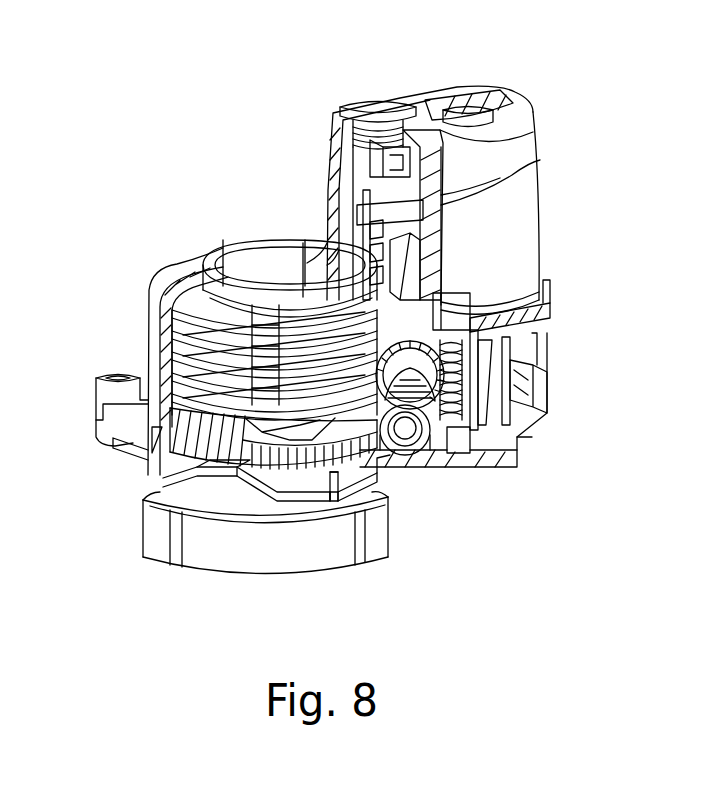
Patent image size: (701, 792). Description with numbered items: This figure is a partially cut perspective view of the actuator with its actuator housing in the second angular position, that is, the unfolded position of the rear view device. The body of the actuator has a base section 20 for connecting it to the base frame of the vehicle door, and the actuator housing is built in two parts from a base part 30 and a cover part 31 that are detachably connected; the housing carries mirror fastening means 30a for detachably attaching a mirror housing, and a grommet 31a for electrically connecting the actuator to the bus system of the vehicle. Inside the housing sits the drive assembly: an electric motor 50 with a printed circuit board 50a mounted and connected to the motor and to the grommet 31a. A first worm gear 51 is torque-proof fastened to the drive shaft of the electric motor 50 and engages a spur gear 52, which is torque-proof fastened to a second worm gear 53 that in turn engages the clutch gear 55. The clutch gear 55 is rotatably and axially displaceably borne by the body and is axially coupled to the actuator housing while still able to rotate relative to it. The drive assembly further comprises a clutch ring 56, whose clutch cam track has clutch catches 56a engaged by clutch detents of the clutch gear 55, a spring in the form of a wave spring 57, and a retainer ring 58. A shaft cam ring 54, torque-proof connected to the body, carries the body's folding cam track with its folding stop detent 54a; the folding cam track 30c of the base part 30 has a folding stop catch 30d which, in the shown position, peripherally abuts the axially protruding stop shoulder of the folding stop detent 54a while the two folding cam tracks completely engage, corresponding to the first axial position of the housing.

The base section 20 is at (217, 573).
The base part 30 is at (528, 455).
The mirror fastening means 30a is at (105, 372).
The folding cam track 30c is at (207, 487).
The folding stop catch 30d is at (327, 483).
The cover part 31 is at (513, 98).
The grommet 31a is at (357, 98).
The electric motor 50 is at (540, 224).
The printed circuit board 50a is at (540, 160).
The first worm gear 51 is at (495, 413).
The spur gear 52 is at (447, 450).
The second worm gear 53 is at (422, 460).
The shaft cam ring 54 is at (387, 480).
The folding stop detent 54a is at (365, 493).
The clutch gear 55 is at (145, 480).
The clutch ring 56 is at (160, 380).
The clutch catches 56a is at (327, 463).
The wave spring 57 is at (170, 323).
The retainer ring 58 is at (207, 290).